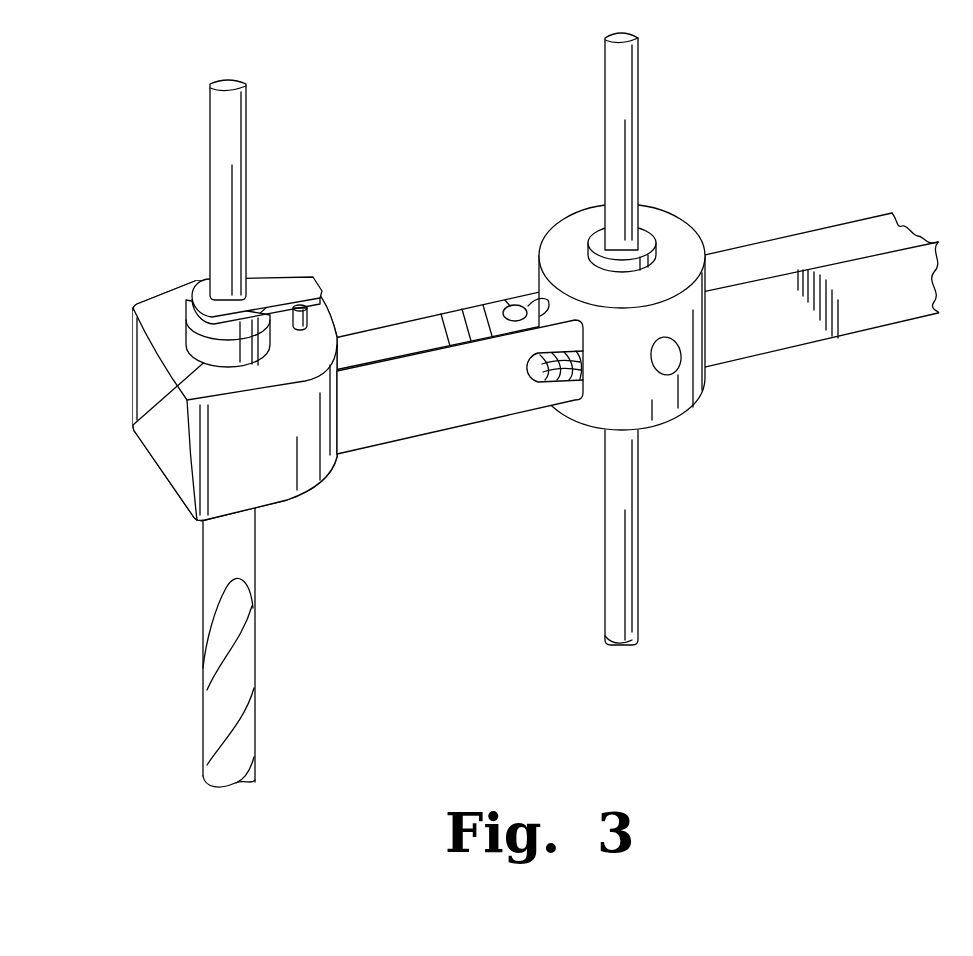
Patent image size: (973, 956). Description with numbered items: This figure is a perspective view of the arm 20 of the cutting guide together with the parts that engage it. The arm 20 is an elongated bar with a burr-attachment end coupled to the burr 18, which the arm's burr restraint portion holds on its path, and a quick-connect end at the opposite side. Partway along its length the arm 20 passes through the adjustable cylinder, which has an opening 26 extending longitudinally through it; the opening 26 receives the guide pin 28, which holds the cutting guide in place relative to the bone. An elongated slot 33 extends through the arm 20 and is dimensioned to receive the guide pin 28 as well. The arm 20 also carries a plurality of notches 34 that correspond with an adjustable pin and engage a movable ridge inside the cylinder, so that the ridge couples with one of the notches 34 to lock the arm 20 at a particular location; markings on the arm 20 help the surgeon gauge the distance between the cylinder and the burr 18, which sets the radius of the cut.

The burr 18 is at (256, 652).
The arm 20 is at (327, 322).
The opening 26 is at (659, 259).
The guide pin 28 is at (638, 127).
The elongated slot 33 is at (517, 308).
The notches 34 is at (533, 382).